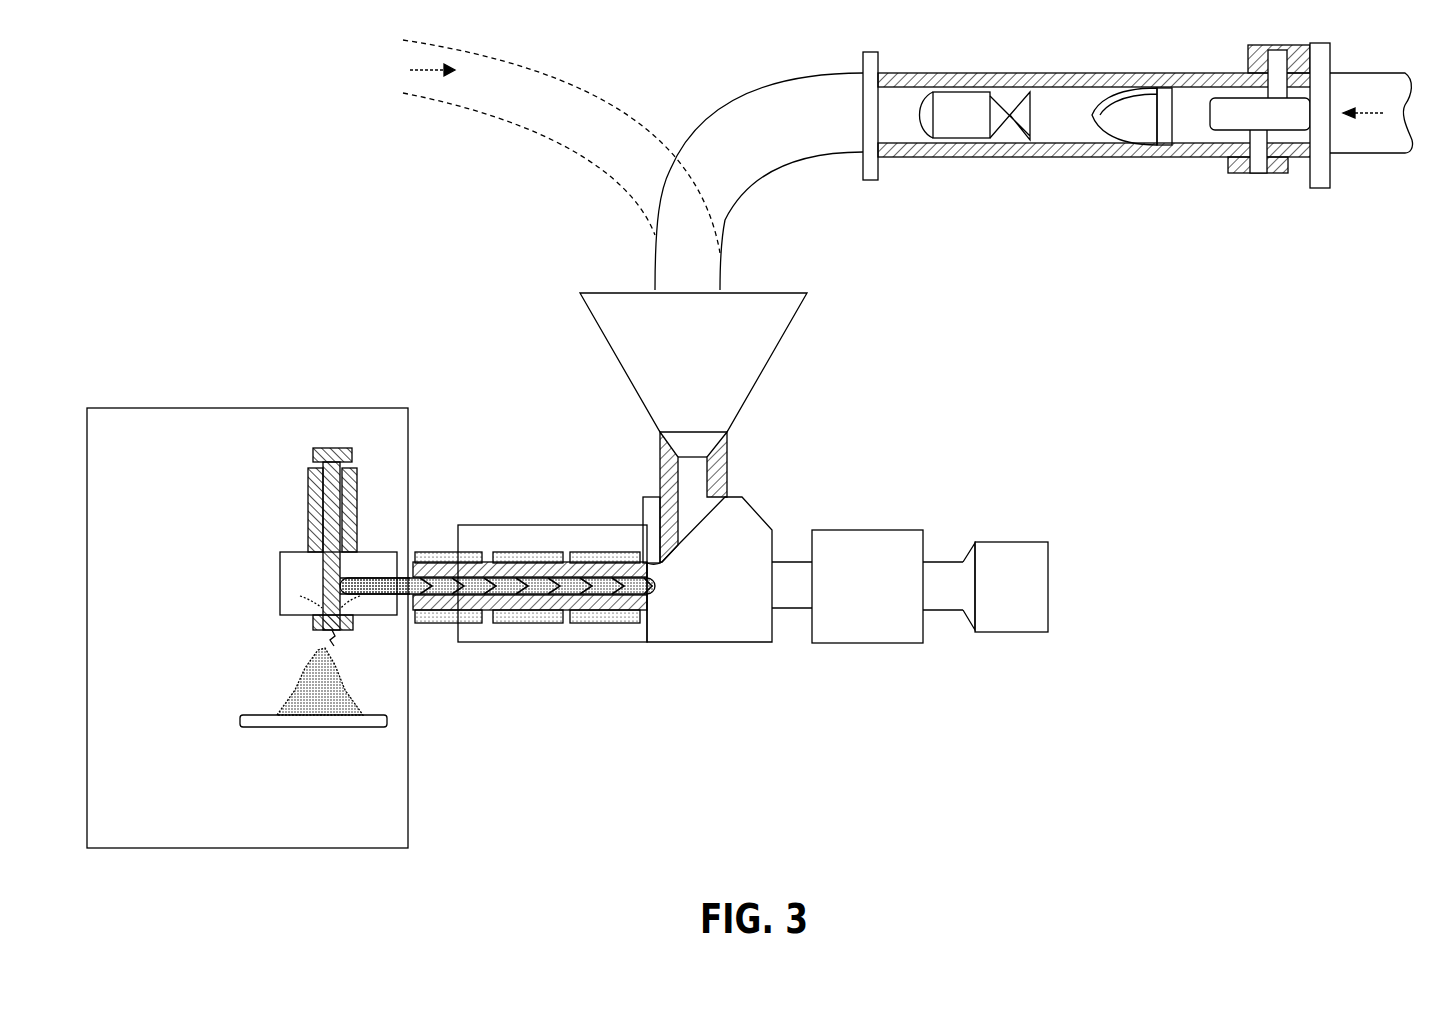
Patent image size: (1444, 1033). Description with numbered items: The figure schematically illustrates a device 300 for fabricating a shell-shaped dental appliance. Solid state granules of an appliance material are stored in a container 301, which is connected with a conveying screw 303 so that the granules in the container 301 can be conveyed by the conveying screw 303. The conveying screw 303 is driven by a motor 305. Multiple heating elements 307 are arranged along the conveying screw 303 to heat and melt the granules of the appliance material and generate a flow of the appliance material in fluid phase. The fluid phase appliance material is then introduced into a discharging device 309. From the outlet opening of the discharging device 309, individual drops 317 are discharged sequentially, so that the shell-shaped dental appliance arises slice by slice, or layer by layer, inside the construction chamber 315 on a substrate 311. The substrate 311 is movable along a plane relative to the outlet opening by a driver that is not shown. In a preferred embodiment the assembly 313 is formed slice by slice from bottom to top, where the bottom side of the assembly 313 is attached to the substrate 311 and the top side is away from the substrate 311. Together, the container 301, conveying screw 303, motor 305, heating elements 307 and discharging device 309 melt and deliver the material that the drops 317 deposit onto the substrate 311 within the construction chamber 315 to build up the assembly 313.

The device for fabricating shell-shaped dental appliance 300 is at (1258, 425).
The container 301 is at (760, 322).
The conveying screw 303 is at (597, 580).
The motor 305 is at (882, 543).
The heating elements 307 is at (600, 623).
The discharging device 309 is at (310, 528).
The substrate 311 is at (257, 722).
The assembly 313 is at (312, 675).
The construction chamber 315 is at (225, 420).
The drops 317 is at (330, 632).